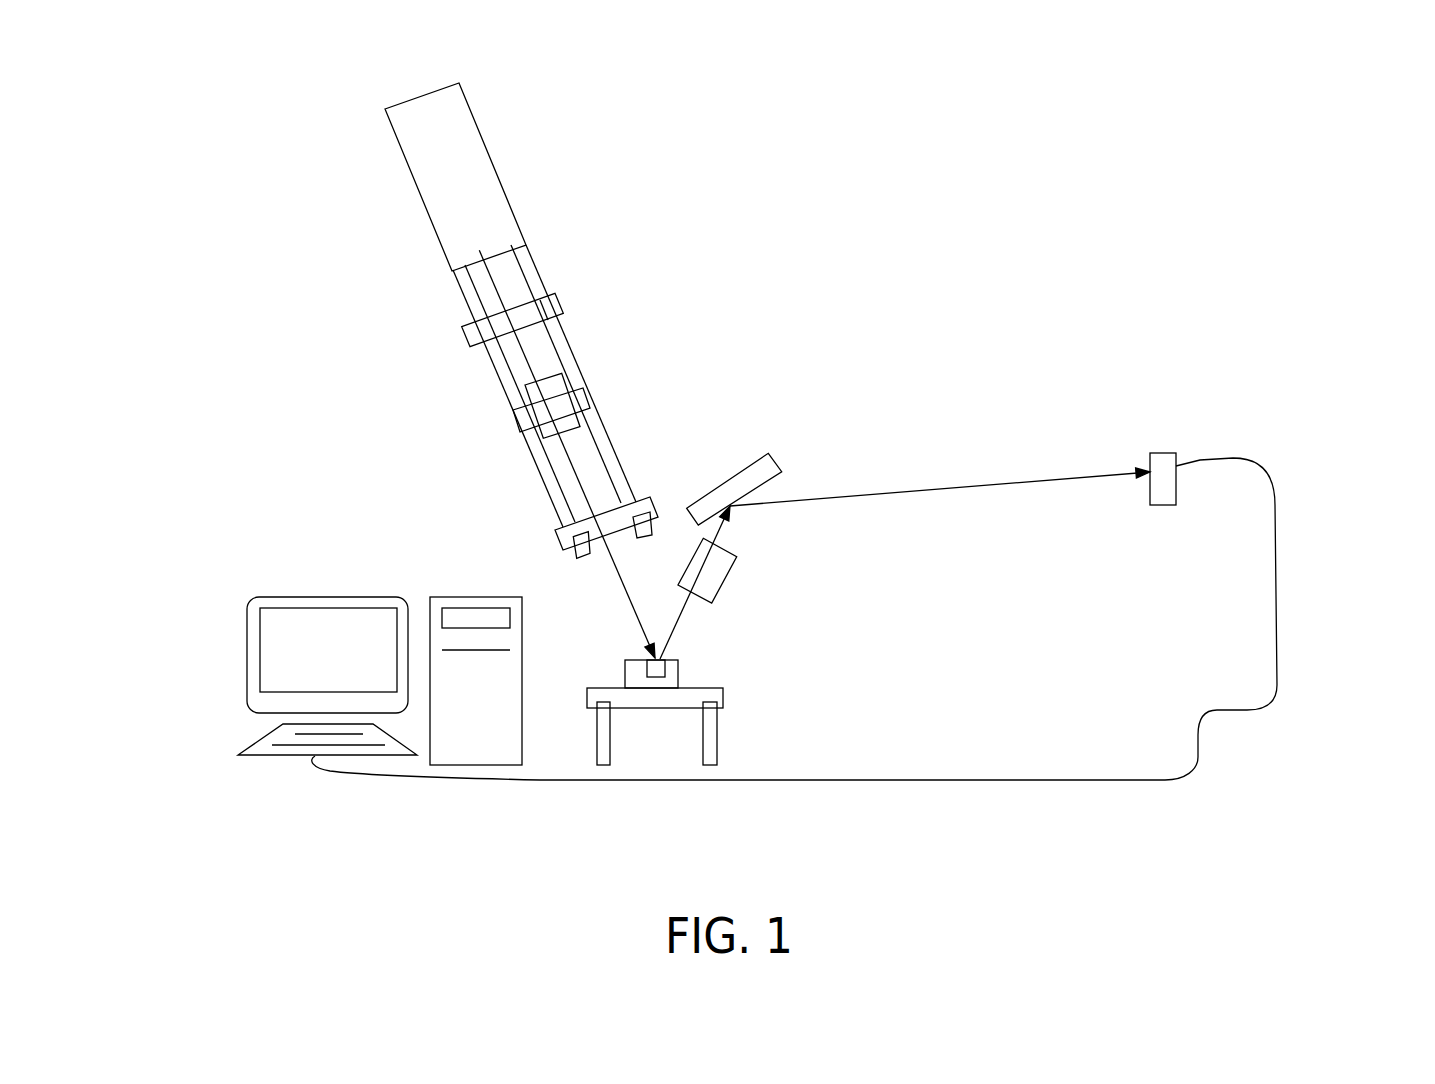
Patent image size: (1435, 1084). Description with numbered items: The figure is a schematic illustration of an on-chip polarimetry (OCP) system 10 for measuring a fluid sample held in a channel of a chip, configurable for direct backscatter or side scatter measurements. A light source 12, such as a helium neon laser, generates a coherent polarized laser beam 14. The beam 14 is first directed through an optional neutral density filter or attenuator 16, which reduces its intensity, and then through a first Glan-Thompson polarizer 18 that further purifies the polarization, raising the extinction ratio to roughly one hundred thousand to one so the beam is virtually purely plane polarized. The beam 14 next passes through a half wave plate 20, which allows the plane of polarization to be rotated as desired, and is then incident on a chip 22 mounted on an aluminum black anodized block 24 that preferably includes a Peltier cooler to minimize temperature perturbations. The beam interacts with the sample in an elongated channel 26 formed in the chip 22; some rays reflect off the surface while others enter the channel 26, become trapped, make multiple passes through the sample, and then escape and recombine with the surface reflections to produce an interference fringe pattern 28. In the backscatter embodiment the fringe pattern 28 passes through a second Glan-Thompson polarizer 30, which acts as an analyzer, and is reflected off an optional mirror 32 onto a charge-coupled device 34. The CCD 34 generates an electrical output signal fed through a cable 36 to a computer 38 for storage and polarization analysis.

The OCP system 10 is at (1087, 92).
The light source 12 is at (485, 178).
The laser beam 14 is at (494, 277).
The neutral density filter or attenuator 16 is at (550, 307).
The first Glan-Thompson polarizer 18 is at (555, 403).
The half wave plate 20 is at (588, 533).
The chip 22 is at (679, 682).
The aluminum black anodized block 24 is at (713, 700).
The elongated channel 26 is at (656, 670).
The interference fringe pattern 28 is at (978, 485).
The second Glan-Thompson polarizer 30 is at (713, 567).
The mirror 32 is at (767, 470).
The charge-coupled device 34 is at (1155, 450).
The cable 36 is at (1277, 583).
The computer 38 is at (380, 633).